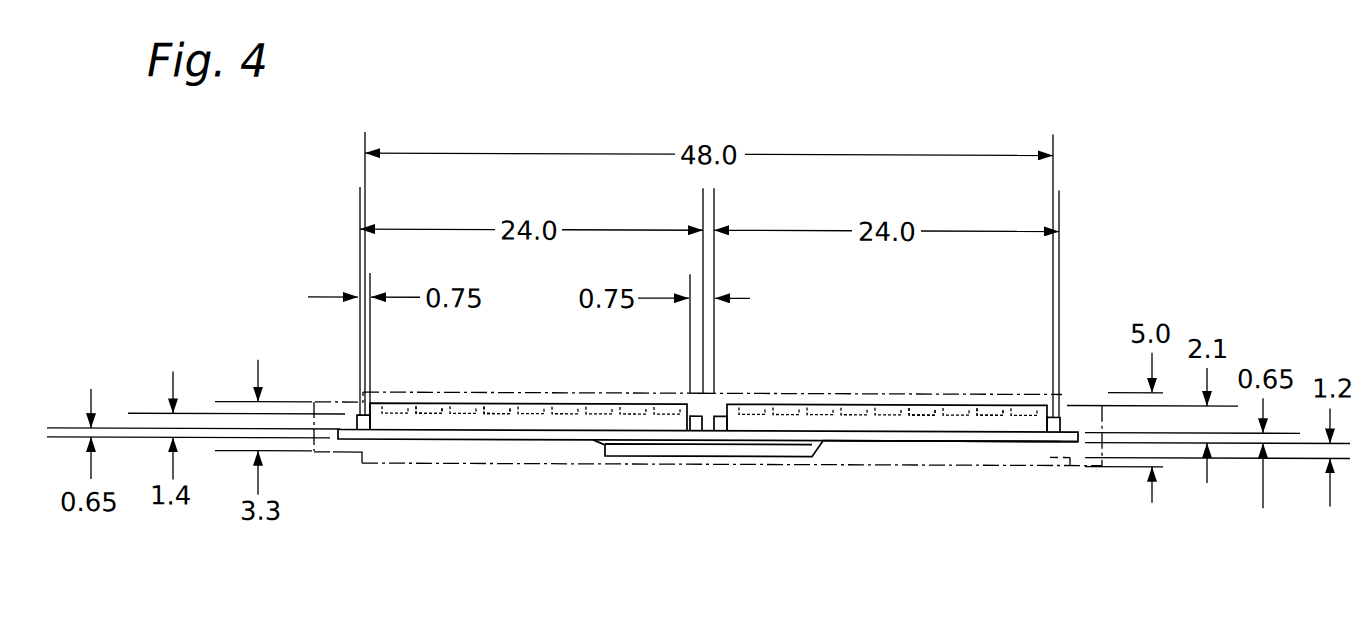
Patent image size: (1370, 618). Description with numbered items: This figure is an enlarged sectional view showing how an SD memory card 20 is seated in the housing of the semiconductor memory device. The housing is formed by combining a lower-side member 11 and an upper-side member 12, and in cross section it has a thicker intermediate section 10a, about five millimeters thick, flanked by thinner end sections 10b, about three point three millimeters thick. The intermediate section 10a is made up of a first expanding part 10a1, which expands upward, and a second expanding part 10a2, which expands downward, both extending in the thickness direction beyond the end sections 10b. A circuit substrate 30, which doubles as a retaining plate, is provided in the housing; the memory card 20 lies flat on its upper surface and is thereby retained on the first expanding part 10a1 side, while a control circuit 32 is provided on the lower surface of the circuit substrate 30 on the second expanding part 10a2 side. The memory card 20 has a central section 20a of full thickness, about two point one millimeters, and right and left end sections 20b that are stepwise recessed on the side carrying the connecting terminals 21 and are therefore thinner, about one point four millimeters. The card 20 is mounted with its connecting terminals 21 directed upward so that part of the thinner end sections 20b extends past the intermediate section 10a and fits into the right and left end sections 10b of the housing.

The intermediate section 10a is at (565, 468).
The first expanding part 10a1 is at (871, 391).
The second expanding part 10a2 is at (800, 468).
The end sections 10b is at (335, 456).
The lower-side member 11 is at (490, 467).
The upper-side member 12 is at (545, 391).
The compact-size semiconductor memory card 20 is at (617, 401).
The central section 20a is at (512, 403).
The end sections 20b is at (360, 415).
The connecting terminals 21 is at (492, 403).
The circuit substrate 30 is at (923, 441).
The control circuit 32 is at (680, 455).